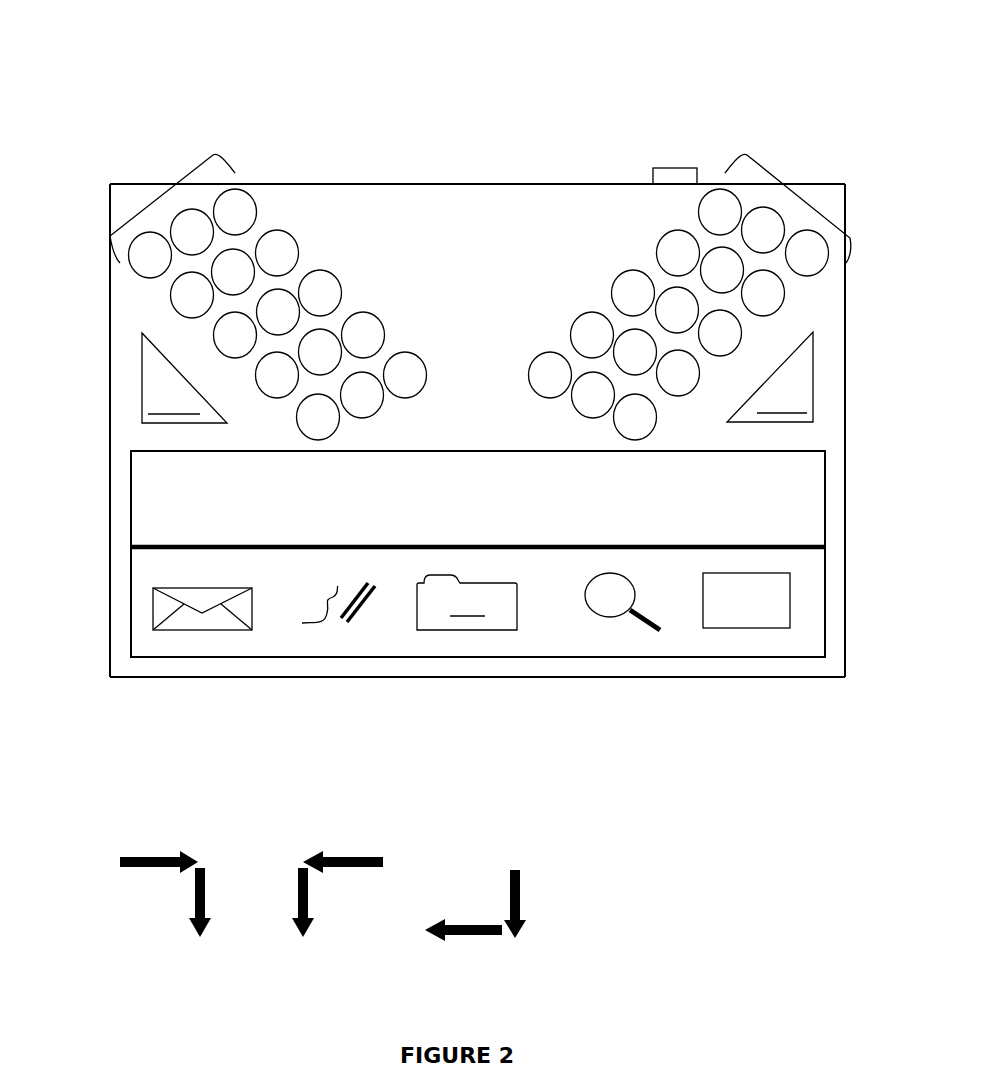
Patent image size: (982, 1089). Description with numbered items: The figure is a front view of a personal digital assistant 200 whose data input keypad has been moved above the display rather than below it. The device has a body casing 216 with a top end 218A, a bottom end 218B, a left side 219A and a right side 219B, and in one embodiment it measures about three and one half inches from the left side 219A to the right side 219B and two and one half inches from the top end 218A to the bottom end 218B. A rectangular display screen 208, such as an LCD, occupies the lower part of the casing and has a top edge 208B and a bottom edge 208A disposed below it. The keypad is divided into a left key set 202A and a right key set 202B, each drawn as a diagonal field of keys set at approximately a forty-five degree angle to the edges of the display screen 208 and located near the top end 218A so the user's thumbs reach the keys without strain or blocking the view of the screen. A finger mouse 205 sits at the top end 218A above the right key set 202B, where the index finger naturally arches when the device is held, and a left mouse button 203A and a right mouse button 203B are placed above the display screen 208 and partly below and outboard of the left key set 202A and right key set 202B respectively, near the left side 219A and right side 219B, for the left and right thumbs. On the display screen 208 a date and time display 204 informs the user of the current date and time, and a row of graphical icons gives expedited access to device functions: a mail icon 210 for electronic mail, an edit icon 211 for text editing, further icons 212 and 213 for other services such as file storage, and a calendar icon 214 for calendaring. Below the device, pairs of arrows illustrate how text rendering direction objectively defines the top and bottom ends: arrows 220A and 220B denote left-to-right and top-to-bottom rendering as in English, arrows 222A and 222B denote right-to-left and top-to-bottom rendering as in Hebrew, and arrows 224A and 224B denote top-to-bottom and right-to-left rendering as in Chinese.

The personal digital assistant 200 is at (575, 72).
The left key set 202A is at (147, 208).
The right key set 202B is at (807, 208).
The left mouse button 203A is at (184, 378).
The right mouse button 203B is at (770, 377).
The date and time display 204 is at (528, 478).
The finger mouse 205 is at (673, 168).
The display screen 208 is at (430, 643).
The bottom edge 208A is at (363, 657).
The top edge 208B is at (463, 450).
The mail icon 210 is at (233, 592).
The edit icon 211 is at (338, 591).
The graphical icon 212 is at (467, 602).
The graphical icon 213 is at (585, 583).
The calendar icon 214 is at (703, 602).
The body casing 216 is at (338, 201).
The top end 218A is at (468, 186).
The bottom end 218B is at (503, 677).
The left side 219A is at (109, 398).
The right side 219B is at (846, 413).
The arrow 220A is at (155, 855).
The arrow 220B is at (197, 903).
The arrow 222A is at (337, 855).
The arrow 222B is at (310, 905).
The arrow 224A is at (488, 937).
The arrow 224B is at (523, 903).